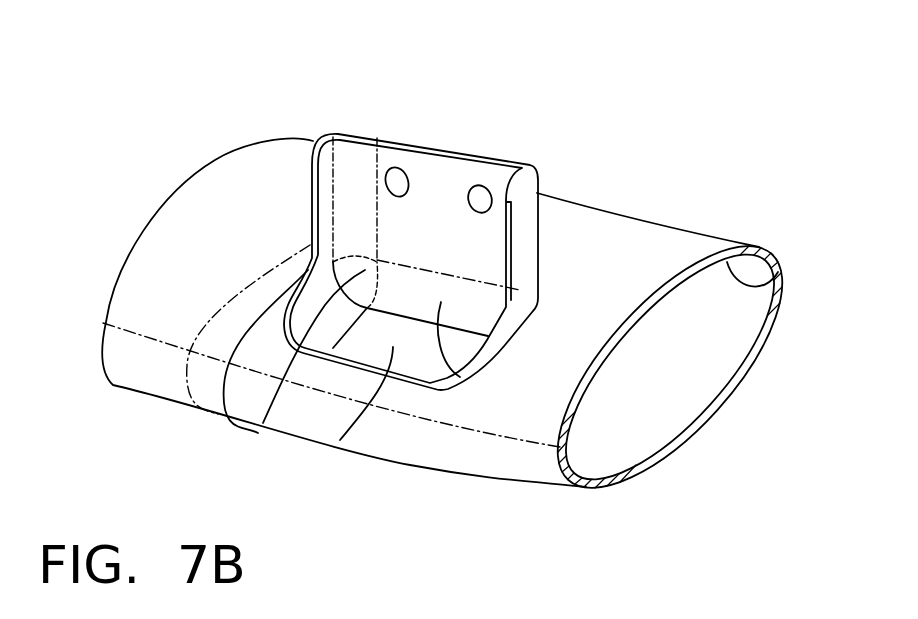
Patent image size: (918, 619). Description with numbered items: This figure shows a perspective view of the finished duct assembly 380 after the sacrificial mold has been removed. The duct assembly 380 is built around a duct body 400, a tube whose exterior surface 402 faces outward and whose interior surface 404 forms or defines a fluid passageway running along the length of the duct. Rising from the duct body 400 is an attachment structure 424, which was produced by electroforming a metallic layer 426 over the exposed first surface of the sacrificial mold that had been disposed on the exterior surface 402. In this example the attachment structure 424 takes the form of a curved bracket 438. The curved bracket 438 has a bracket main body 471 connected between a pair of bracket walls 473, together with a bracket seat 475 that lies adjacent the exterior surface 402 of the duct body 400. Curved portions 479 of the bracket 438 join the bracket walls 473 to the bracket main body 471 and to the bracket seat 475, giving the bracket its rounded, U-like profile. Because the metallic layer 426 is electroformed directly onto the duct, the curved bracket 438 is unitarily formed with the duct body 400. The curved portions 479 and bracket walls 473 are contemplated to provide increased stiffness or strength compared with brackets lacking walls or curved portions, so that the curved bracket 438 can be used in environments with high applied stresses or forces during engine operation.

The duct assembly 380 is at (758, 72).
The duct body 400 is at (603, 250).
The exterior surface 402 is at (663, 240).
The interior surface 404 is at (775, 273).
The attachment structure 424 is at (453, 172).
The metallic layer 426 is at (300, 214).
The curved bracket 438 is at (391, 150).
The bracket main body 471 is at (423, 157).
The bracket walls 473 is at (323, 148).
The bracket seat 475 is at (340, 440).
The curved portions 479 is at (263, 423).